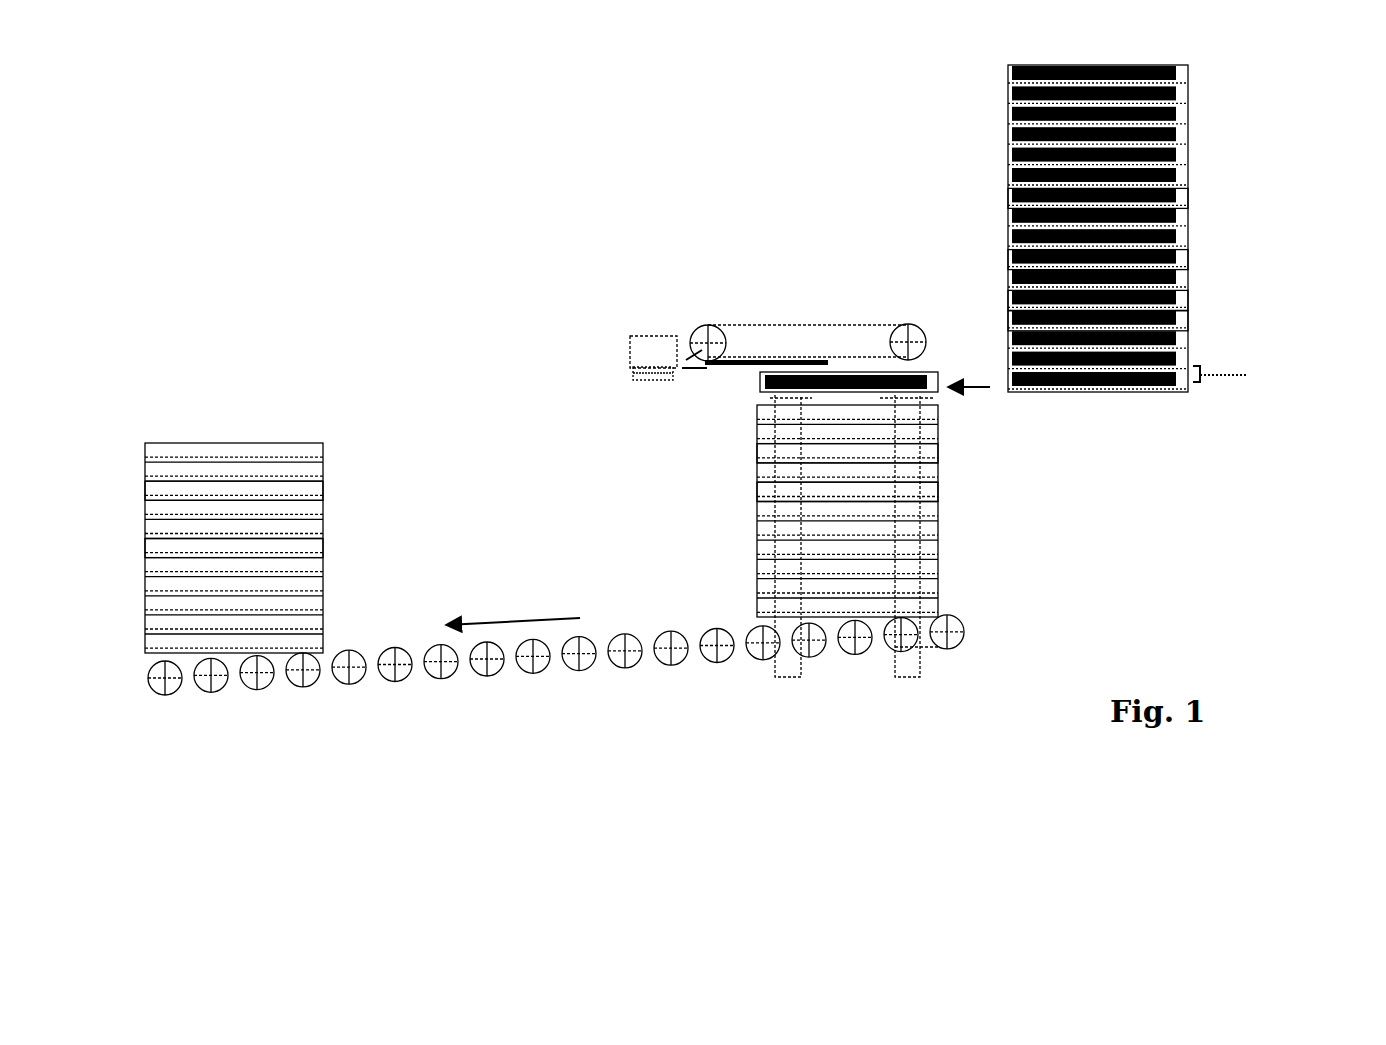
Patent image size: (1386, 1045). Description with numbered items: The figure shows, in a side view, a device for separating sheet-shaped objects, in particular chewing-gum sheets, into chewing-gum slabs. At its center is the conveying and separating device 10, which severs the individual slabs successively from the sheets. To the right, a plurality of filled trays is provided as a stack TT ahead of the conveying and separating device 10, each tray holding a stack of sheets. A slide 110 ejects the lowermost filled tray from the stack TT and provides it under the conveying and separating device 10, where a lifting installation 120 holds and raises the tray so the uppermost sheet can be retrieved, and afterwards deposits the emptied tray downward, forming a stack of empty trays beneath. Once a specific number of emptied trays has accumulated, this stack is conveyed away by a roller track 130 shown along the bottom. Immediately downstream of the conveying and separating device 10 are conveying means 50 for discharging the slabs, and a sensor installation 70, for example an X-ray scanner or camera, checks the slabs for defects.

The conveying and separating device 10 is at (809, 312).
The conveying means 50 is at (645, 378).
The sensor installation 70 is at (655, 338).
The slide 110 is at (1222, 378).
The lifting installation 120 is at (786, 625).
The roller track 130 is at (493, 668).
The stack of trays TT is at (1214, 89).